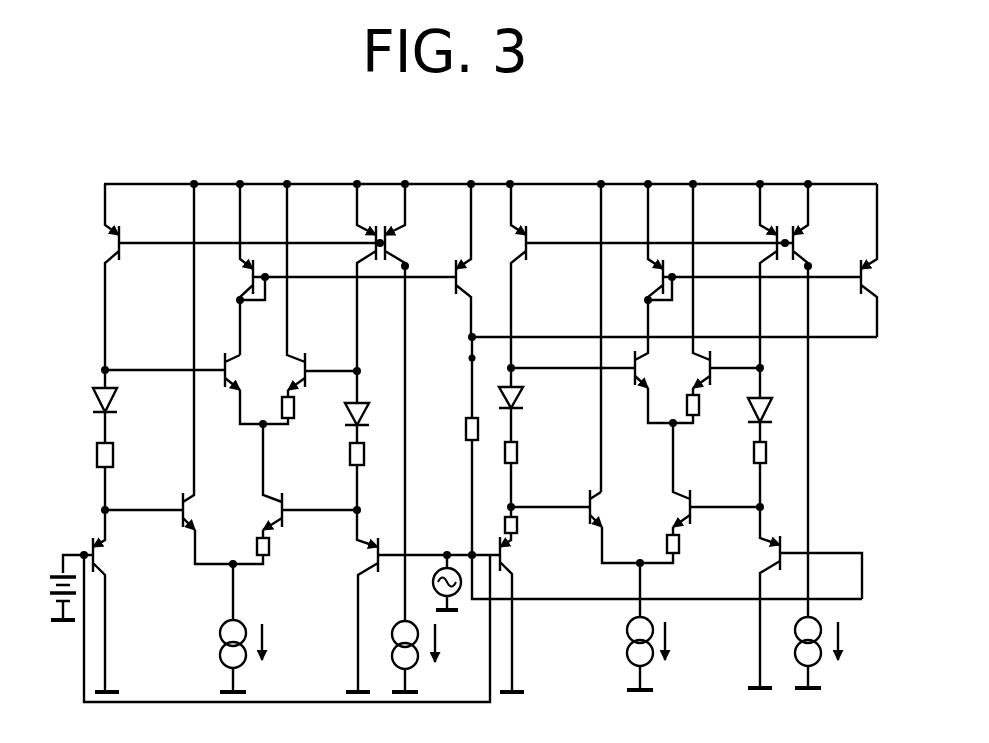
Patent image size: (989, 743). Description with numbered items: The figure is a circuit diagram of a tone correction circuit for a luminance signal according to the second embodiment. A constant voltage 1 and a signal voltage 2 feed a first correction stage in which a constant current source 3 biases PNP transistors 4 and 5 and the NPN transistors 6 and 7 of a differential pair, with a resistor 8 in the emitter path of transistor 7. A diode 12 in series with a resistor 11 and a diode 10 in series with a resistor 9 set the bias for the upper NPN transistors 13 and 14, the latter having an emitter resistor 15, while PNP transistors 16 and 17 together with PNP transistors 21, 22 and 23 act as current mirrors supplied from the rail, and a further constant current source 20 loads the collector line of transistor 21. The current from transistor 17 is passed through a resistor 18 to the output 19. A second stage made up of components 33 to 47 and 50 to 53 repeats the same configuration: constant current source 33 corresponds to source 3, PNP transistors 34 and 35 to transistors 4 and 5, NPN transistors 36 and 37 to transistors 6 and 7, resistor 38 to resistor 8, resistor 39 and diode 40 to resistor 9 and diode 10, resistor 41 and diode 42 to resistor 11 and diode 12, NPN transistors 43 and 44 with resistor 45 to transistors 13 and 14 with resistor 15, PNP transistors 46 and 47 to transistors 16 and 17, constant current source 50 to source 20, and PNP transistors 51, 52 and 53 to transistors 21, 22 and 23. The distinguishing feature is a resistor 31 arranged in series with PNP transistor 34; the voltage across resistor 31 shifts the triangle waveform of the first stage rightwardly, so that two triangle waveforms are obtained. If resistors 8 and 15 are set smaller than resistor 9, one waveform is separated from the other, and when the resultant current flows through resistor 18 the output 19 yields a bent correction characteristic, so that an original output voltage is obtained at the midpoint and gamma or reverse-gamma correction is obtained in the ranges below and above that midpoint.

The constant voltage 1 is at (55, 586).
The signal voltage 2 is at (443, 584).
The constant current source 3 is at (248, 628).
The PNP transistor 4 is at (101, 601).
The PNP transistor 5 is at (423, 601).
The NPN transistor 6 is at (169, 374).
The NPN transistor 7 is at (310, 481).
The resistor 8 is at (262, 552).
The resistor 9 is at (367, 476).
The diode 10 is at (373, 407).
The resistor 11 is at (95, 476).
The diode 12 is at (88, 406).
The NPN transistor 13 is at (184, 377).
The NPN transistor 14 is at (322, 290).
The resistor 15 is at (294, 411).
The PNP transistor 16 is at (241, 269).
The PNP transistor 17 is at (363, 260).
The resistor 18 is at (458, 432).
The output 19 is at (472, 358).
The constant current source 20 is at (432, 657).
The PNP transistor 21 is at (408, 402).
The PNP transistor 22 is at (348, 277).
The PNP transistor 23 is at (240, 277).
The resistor 31 is at (529, 525).
The constant current source 33 is at (648, 626).
The PNP transistor 34 is at (523, 612).
The PNP transistor 35 is at (800, 597).
The NPN transistor 36 is at (575, 517).
The NPN transistor 37 is at (716, 479).
The resistor 38 is at (675, 550).
The resistor 39 is at (778, 474).
The diode 40 is at (777, 405).
The resistor 41 is at (529, 474).
The diode 42 is at (526, 405).
The NPN transistor 43 is at (592, 361).
The NPN transistor 44 is at (726, 289).
The resistor 45 is at (701, 413).
The PNP transistor 46 is at (739, 244).
The PNP transistor 47 is at (857, 260).
The constant current source 50 is at (835, 655).
The PNP transistor 51 is at (808, 400).
The PNP transistor 52 is at (750, 276).
The PNP transistor 53 is at (644, 276).